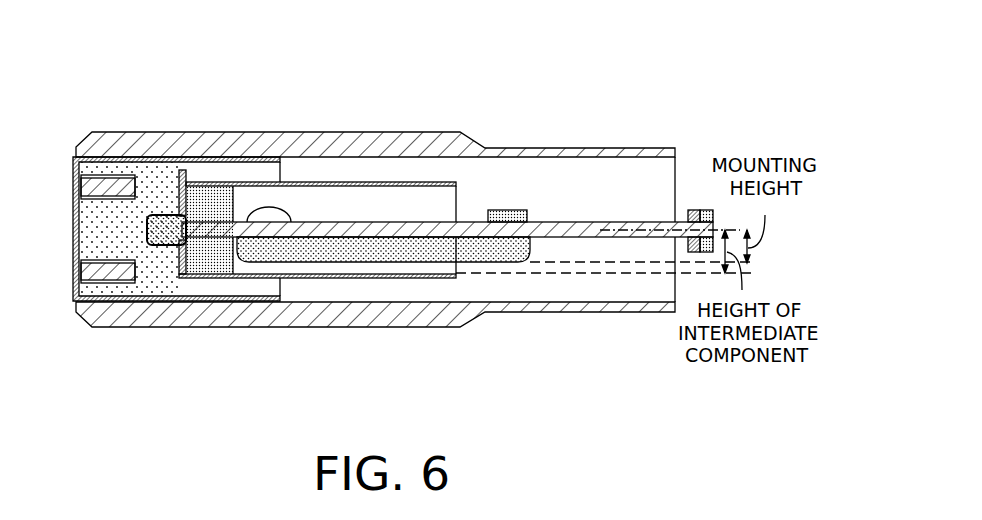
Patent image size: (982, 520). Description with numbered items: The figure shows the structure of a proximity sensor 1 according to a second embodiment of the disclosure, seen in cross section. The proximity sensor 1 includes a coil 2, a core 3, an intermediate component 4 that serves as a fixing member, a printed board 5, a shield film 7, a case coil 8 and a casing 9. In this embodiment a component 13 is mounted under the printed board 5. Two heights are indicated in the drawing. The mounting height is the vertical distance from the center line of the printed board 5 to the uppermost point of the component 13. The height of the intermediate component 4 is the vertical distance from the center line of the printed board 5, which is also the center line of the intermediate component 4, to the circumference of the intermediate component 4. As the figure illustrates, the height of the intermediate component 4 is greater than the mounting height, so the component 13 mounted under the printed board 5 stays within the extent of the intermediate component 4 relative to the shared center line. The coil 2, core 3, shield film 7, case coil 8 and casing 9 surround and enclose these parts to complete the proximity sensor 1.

The proximity sensor 1 is at (414, 193).
The coil 2 is at (105, 187).
The core 3 is at (160, 173).
The intermediate component 4 is at (167, 235).
The printed board 5 is at (553, 228).
The shield film 7 is at (347, 183).
The case coil 8 is at (233, 158).
The casing 9 is at (450, 140).
The component 13 is at (397, 250).